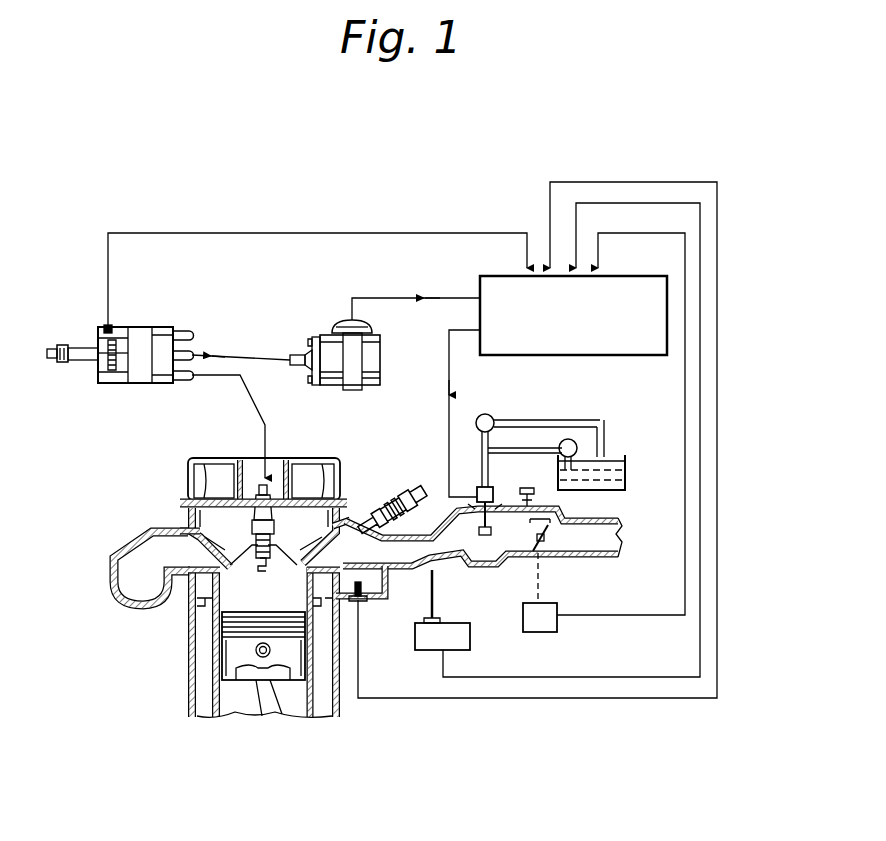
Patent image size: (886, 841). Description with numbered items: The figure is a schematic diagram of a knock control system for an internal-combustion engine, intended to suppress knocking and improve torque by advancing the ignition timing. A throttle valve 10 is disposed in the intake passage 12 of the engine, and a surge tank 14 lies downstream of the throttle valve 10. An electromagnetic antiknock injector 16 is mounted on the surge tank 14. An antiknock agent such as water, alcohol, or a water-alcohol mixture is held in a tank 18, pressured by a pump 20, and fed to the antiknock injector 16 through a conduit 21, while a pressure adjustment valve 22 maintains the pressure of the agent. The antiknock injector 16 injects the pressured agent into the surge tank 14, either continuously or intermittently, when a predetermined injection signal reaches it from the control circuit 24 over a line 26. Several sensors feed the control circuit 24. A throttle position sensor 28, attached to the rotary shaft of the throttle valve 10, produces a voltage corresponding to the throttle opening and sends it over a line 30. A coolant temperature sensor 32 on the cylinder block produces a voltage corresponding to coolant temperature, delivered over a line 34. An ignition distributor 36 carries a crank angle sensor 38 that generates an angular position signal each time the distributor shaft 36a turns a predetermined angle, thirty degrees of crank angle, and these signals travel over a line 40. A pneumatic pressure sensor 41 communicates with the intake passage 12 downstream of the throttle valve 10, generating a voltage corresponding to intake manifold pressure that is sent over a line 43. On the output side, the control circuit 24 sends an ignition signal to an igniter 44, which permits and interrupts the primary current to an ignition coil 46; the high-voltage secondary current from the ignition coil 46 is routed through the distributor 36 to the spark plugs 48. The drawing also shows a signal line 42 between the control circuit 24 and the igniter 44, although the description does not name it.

The throttle valve 10 is at (545, 546).
The intake passage 12 is at (438, 535).
The surge tank 14 is at (487, 558).
The electromagnetic antiknock injector 16 is at (495, 497).
The tank 18 is at (626, 478).
The pump 20 is at (604, 452).
The conduit 21 is at (522, 447).
The pressure adjustment valve 22 is at (492, 414).
The control circuit 24 is at (604, 356).
The line 26 is at (449, 436).
The throttle position sensor 28 is at (545, 634).
The line 30 is at (637, 617).
The coolant temperature sensor 32 is at (370, 600).
The line 34 is at (392, 702).
The ignition distributor 36 is at (160, 327).
The distributor shaft 36a is at (58, 362).
The crank angle sensor 38 is at (104, 327).
The line 40 is at (250, 233).
The pneumatic pressure sensor 41 is at (455, 624).
The ignition signal line 42 is at (447, 297).
The line 43 is at (505, 677).
The igniter 44 is at (336, 328).
The ignition coil 46 is at (380, 358).
The spark plugs 48 is at (276, 478).